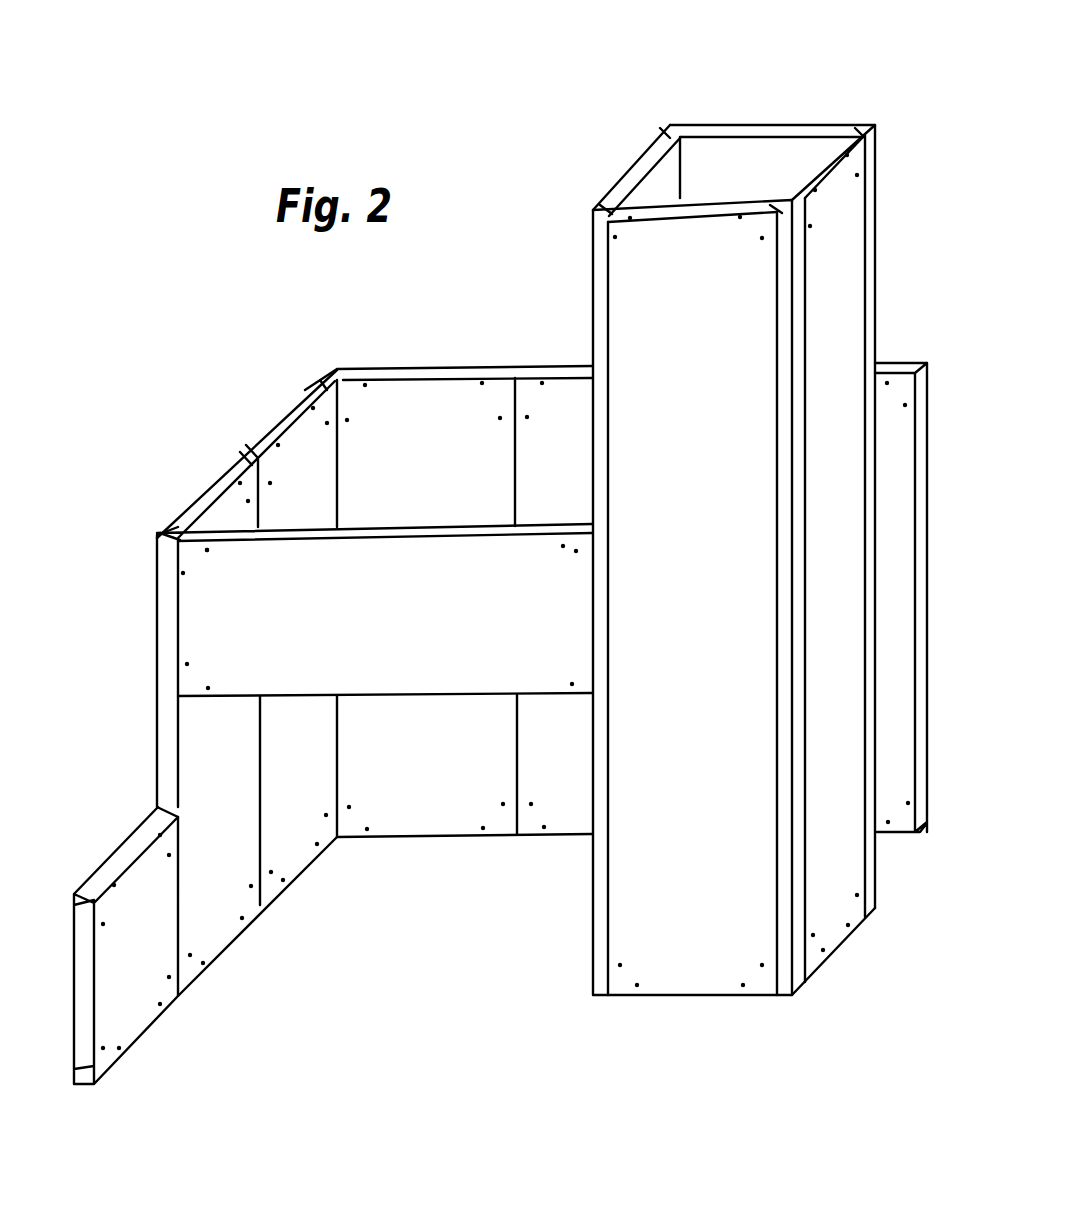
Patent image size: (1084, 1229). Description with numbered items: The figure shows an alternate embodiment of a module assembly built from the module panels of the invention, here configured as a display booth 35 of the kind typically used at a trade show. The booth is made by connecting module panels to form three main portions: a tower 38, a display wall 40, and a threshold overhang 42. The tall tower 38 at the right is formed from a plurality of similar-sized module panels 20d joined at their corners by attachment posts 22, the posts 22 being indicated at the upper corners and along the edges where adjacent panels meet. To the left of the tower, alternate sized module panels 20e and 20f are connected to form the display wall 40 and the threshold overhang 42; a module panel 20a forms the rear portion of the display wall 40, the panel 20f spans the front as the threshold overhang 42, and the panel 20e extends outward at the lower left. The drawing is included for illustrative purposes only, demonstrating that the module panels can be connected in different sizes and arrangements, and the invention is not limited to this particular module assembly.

The module panel 20a is at (430, 484).
The similar-sized module panel 20d is at (700, 566).
The alternate sized module panel 20e is at (135, 1001).
The alternate sized module panel 20f is at (400, 636).
The attachment post 22 is at (672, 127).
The display booth 35 is at (749, 104).
The tower 38 is at (874, 220).
The display wall 40 is at (427, 362).
The threshold overhang 42 is at (234, 592).